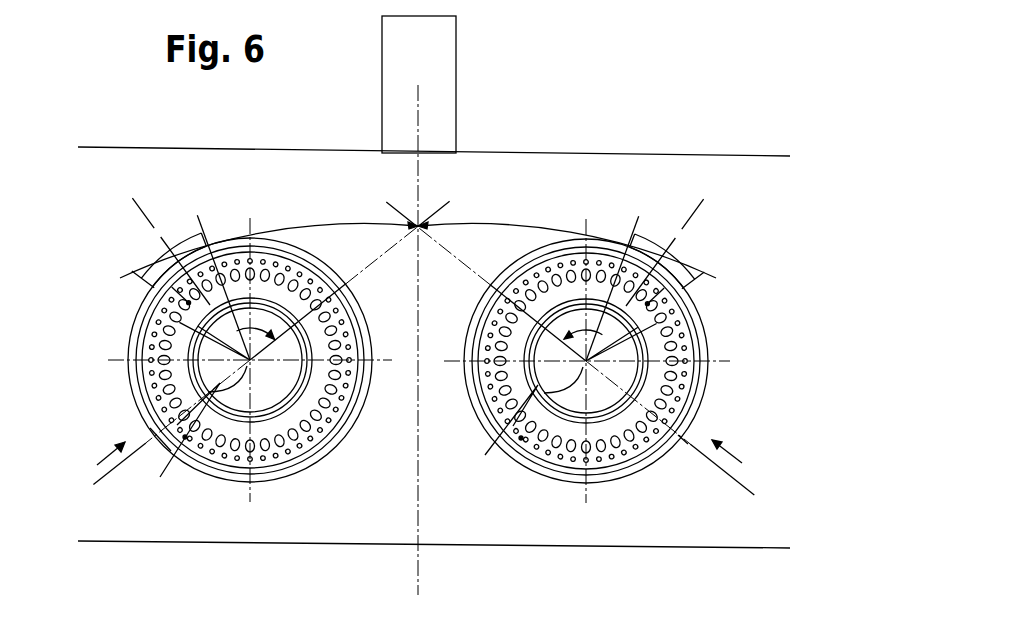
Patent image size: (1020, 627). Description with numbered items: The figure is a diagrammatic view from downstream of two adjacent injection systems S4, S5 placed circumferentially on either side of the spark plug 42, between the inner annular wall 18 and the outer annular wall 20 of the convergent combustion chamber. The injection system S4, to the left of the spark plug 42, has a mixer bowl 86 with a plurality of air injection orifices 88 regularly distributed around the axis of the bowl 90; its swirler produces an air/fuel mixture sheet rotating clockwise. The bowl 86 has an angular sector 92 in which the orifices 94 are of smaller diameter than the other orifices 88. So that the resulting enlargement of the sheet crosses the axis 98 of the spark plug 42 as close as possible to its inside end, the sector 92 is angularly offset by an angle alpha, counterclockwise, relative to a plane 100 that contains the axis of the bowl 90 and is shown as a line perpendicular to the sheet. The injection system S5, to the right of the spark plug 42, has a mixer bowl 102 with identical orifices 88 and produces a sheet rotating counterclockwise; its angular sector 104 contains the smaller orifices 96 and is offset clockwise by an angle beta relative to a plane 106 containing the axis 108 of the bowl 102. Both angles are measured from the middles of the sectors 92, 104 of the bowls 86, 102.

The inner annular wall 18 is at (604, 543).
The outer annular wall 20 is at (651, 156).
The spark plug 42 is at (457, 113).
The mixer bowl 86 is at (308, 469).
The air injection orifices 88 is at (149, 367).
The axis of the bowl 90 is at (178, 446).
The angular sector 92 is at (178, 232).
The orifices of smaller diameter 94 is at (172, 287).
The orifices of smaller diameter 96 is at (651, 302).
The axis of the spark plug 98 is at (420, 190).
The plane 100 is at (113, 478).
The mixer bowl 102 is at (701, 320).
The angular sector 104 is at (653, 233).
The plane 106 is at (716, 470).
The axis of the bowl 108 is at (492, 435).
The injection system S4 is at (95, 462).
The injection system S5 is at (744, 462).